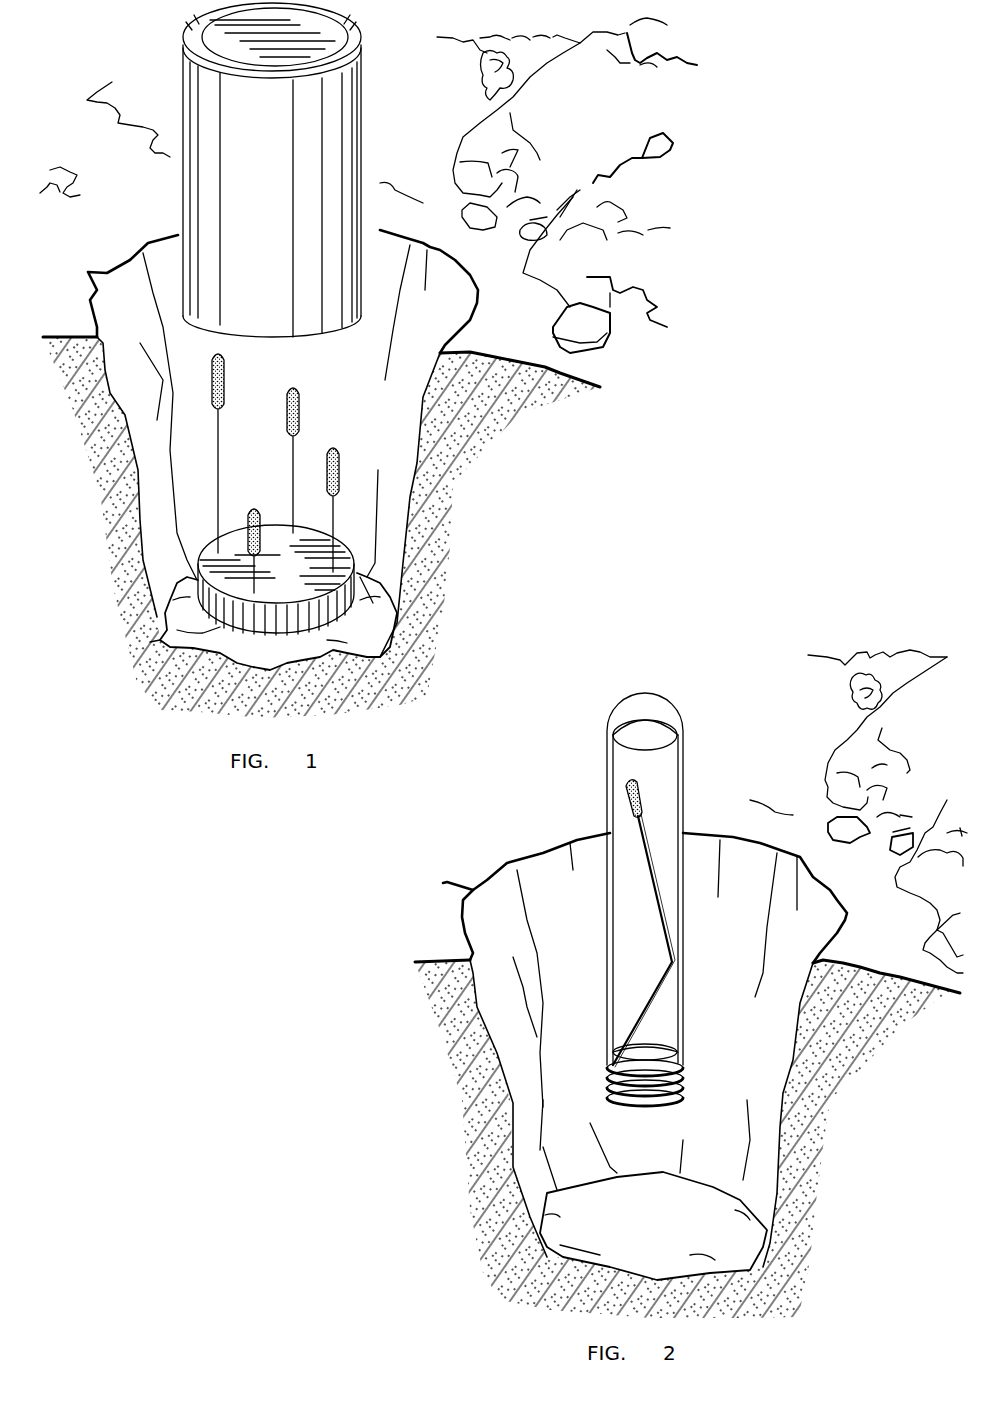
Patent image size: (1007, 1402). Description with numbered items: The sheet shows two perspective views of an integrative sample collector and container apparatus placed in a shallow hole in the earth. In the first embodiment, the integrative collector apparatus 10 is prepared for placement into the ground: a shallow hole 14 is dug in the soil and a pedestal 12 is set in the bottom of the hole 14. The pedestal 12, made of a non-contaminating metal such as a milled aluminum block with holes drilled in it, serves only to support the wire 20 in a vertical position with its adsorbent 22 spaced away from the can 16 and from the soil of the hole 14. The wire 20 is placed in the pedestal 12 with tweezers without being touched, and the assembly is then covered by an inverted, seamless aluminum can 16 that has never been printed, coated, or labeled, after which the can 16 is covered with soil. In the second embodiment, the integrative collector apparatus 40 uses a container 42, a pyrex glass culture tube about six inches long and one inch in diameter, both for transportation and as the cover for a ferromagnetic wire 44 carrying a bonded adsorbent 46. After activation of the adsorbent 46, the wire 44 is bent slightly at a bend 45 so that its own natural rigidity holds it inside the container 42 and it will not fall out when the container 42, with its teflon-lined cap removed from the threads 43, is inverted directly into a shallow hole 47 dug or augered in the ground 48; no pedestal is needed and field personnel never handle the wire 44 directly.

In FIG. 1, the integrative collector apparatus 10 is at (403, 120).
In FIG. 1, the pedestal 12 is at (317, 610).
In FIG. 1, the shallow hole 14 is at (405, 490).
In FIG. 1, the aluminum can 16 is at (333, 297).
In FIG. 1, the wire 20 is at (290, 453).
In FIG. 1, the adsorbent 22 is at (300, 396).
In FIG. 2, the integrative collector apparatus 40 is at (723, 788).
In FIG. 2, the container 42 is at (641, 899).
In FIG. 2, the threads 43 is at (608, 1084).
In FIG. 2, the ferromagnetic wire 44 is at (645, 913).
In FIG. 2, the bend 45 is at (668, 966).
In FIG. 2, the adsorbent 46 is at (636, 790).
In FIG. 2, the hole 47 is at (792, 1068).
In FIG. 2, the ground 48 is at (860, 1011).